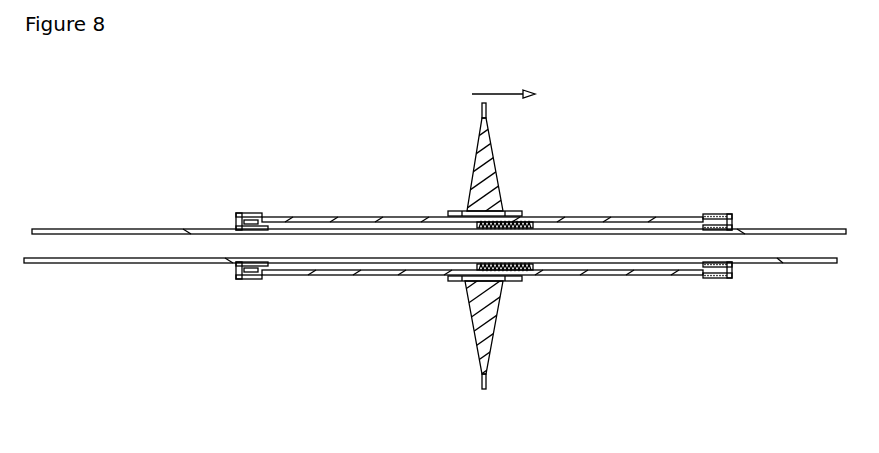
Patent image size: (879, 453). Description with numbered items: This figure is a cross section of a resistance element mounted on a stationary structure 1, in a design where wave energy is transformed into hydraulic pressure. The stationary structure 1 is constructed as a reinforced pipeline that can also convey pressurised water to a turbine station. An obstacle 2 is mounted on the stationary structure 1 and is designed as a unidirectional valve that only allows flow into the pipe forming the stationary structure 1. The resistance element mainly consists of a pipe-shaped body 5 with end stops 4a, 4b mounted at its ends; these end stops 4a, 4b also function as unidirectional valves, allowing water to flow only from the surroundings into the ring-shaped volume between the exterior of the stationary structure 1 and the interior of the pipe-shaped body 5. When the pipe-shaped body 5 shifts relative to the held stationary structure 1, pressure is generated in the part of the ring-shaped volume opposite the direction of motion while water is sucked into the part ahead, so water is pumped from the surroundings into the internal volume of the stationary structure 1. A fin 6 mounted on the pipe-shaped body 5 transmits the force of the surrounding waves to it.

The stationary structure 1 is at (151, 244).
The obstacle 2 is at (493, 223).
The end stop 4a is at (248, 220).
The end stop 4b is at (725, 219).
The pipe-shaped body 5 is at (560, 220).
The fin 6 is at (480, 178).